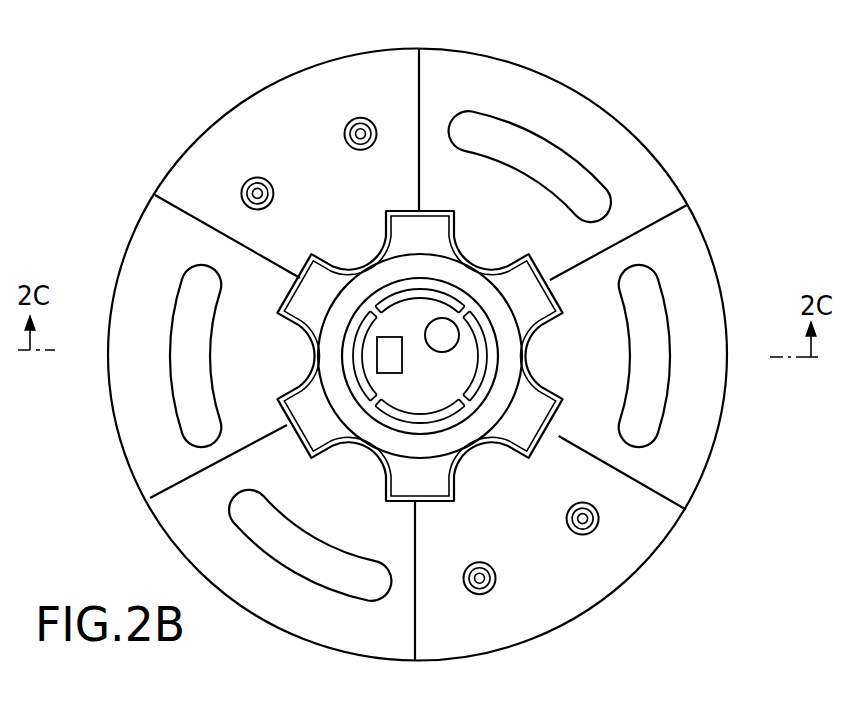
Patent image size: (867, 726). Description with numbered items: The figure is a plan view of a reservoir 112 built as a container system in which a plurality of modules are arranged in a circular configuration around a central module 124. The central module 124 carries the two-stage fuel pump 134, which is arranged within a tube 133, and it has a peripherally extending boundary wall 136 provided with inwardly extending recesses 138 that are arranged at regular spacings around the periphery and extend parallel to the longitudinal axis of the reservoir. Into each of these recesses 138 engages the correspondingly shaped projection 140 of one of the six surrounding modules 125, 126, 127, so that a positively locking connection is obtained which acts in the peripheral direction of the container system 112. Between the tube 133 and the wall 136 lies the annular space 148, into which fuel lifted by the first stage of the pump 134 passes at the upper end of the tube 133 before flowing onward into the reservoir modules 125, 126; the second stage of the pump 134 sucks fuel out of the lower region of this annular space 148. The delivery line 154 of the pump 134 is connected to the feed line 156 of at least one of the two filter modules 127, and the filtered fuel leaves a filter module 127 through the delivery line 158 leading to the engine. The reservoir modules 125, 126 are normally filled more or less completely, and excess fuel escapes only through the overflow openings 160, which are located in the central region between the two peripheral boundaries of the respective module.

The reservoir 112 is at (729, 432).
The central module 124 is at (418, 211).
The reservoir module 125 is at (690, 229).
The reservoir module 126 is at (140, 438).
The filter module 127 is at (303, 85).
The tube 133 is at (383, 424).
The two-stage fuel pump 134 is at (330, 272).
The boundary wall 136 is at (400, 498).
The recess 138 is at (298, 393).
The projection 140 is at (300, 362).
The annular space 148 is at (532, 303).
The delivery line 154 is at (441, 328).
The feed line 156 is at (365, 117).
The delivery line 158 is at (244, 182).
The overflow opening 160 is at (655, 427).